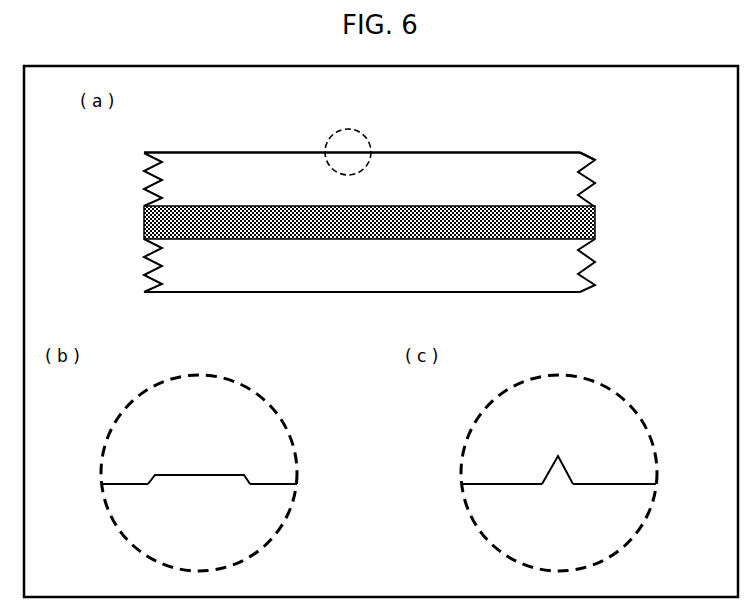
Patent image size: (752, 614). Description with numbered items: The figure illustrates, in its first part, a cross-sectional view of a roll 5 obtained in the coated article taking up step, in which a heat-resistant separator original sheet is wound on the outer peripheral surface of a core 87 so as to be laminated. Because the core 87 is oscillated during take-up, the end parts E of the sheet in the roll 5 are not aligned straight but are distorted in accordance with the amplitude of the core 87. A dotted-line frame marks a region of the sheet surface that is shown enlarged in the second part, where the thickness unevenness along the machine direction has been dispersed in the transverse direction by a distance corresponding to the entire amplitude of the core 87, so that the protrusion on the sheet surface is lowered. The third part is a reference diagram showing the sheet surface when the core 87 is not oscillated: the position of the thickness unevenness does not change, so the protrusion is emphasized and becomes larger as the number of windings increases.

The roll 5 is at (659, 121).
The core 87 is at (596, 223).
The end parts E is at (595, 152).